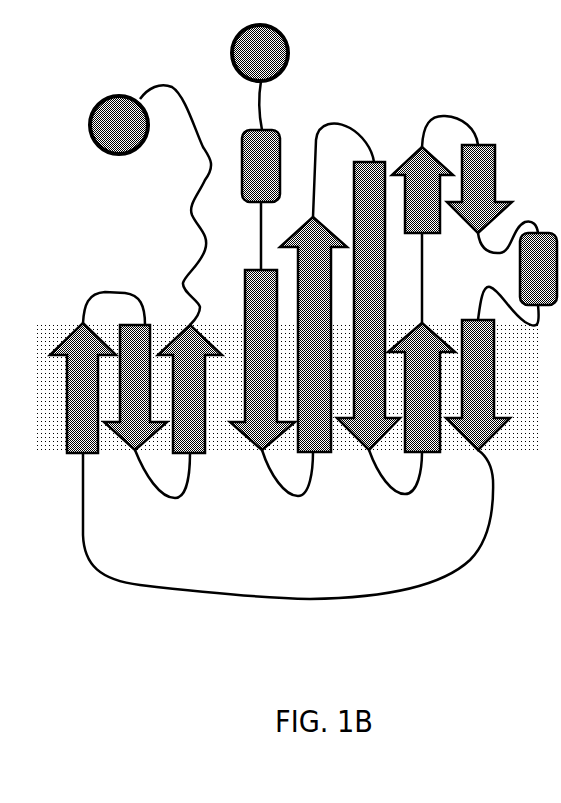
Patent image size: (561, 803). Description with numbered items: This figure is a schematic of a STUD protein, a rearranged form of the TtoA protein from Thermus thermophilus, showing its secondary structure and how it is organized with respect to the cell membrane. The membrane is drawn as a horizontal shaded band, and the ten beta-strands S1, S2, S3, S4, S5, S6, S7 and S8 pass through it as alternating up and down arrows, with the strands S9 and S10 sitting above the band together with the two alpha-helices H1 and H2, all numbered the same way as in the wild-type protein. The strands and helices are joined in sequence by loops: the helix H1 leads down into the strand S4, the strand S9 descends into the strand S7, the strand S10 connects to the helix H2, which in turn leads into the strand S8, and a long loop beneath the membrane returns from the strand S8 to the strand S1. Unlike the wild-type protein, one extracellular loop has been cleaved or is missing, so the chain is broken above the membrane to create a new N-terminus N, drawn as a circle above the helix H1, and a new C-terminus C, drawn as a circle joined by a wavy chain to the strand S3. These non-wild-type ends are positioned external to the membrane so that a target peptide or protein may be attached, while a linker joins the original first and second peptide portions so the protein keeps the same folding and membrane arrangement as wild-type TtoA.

The N-terminus N is at (260, 77).
The C-terminus C is at (150, 205).
The alpha-helix H1 is at (261, 200).
The alpha-helix H2 is at (517, 274).
The beta-strand S1 is at (271, 445).
The beta-strand S2 is at (147, 411).
The beta-strand S3 is at (190, 389).
The beta-strand S4 is at (271, 383).
The beta-strand S5 is at (327, 288).
The beta-strand S6 is at (379, 328).
The beta-strand S7 is at (421, 387).
The beta-strand S8 is at (478, 385).
The beta-strand S9 is at (435, 219).
The beta-strand S10 is at (479, 189).